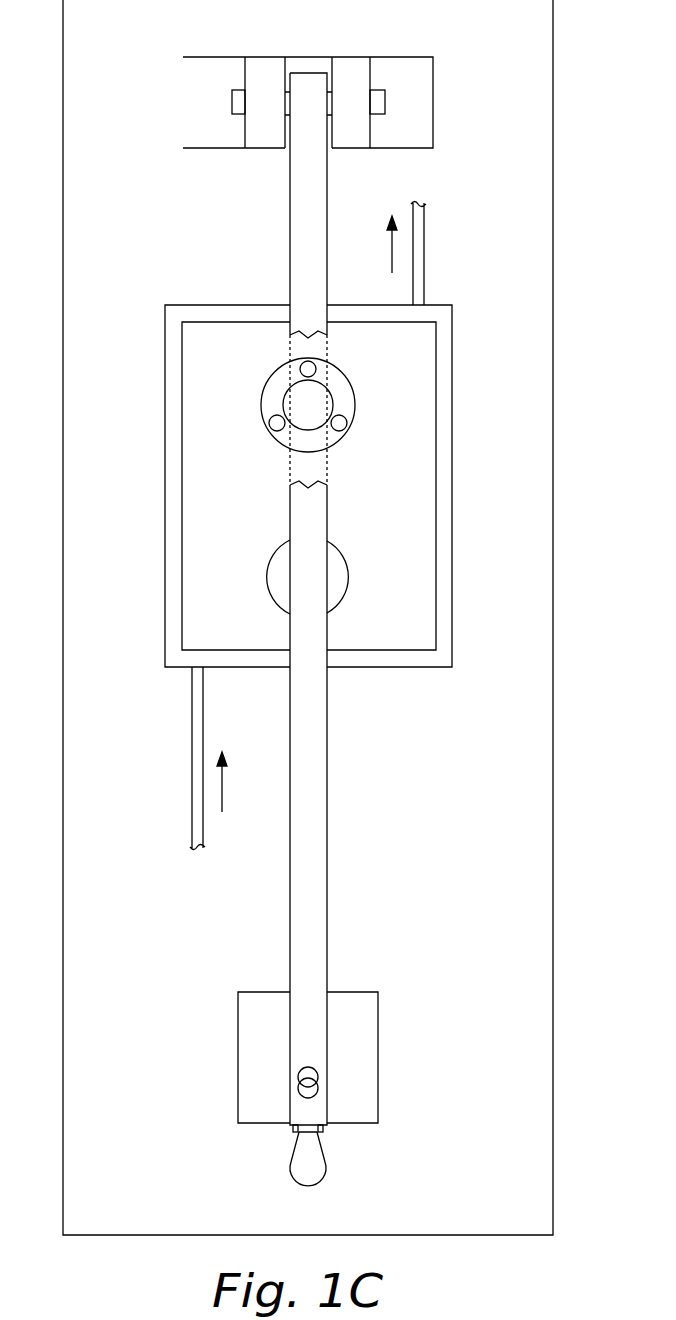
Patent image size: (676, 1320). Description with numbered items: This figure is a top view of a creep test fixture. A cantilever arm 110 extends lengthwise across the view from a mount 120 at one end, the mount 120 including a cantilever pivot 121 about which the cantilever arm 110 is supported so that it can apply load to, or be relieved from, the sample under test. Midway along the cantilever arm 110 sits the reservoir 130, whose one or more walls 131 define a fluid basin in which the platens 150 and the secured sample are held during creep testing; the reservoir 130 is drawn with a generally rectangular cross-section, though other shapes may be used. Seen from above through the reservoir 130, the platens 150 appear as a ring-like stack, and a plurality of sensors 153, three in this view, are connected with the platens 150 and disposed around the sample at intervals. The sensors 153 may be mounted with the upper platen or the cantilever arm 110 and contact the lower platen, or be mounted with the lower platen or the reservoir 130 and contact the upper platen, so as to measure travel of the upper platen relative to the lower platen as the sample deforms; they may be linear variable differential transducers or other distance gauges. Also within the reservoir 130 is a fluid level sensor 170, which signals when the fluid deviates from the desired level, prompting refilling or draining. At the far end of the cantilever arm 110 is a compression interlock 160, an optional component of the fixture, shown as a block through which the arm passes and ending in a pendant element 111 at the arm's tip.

The cantilever arm 110 is at (327, 855).
The shaft aperture 111 is at (318, 1080).
The mount 120 is at (433, 101).
The cantilever pivot 121 is at (238, 103).
The reservoir 130 is at (185, 275).
The walls 131 is at (453, 478).
The platens 150 is at (341, 388).
The sensors 153 is at (304, 365).
The compression interlock 160 is at (391, 1011).
The fluid level sensor 170 is at (271, 560).